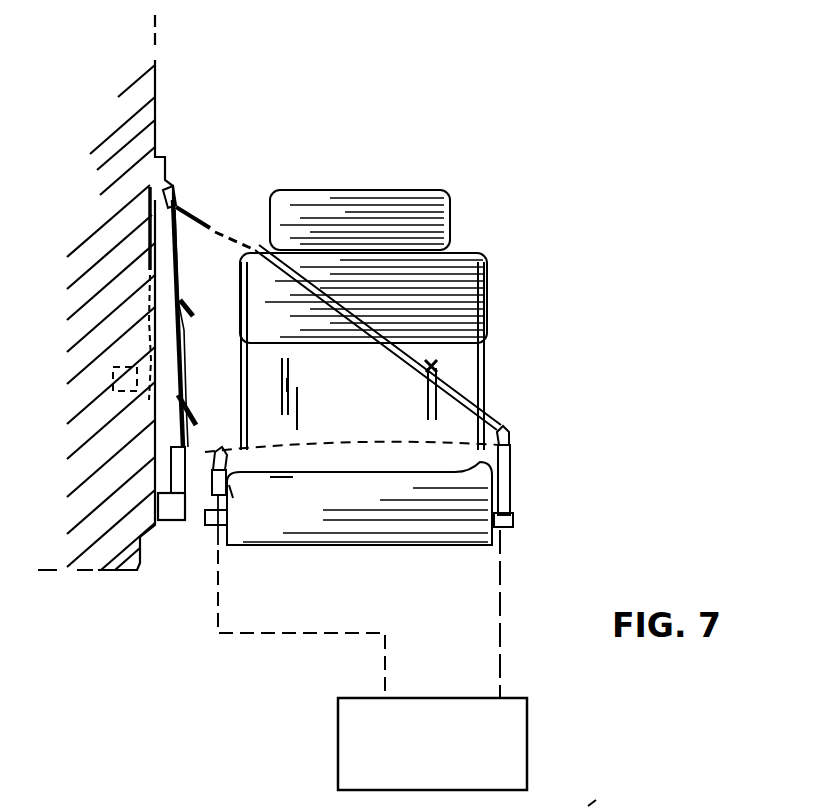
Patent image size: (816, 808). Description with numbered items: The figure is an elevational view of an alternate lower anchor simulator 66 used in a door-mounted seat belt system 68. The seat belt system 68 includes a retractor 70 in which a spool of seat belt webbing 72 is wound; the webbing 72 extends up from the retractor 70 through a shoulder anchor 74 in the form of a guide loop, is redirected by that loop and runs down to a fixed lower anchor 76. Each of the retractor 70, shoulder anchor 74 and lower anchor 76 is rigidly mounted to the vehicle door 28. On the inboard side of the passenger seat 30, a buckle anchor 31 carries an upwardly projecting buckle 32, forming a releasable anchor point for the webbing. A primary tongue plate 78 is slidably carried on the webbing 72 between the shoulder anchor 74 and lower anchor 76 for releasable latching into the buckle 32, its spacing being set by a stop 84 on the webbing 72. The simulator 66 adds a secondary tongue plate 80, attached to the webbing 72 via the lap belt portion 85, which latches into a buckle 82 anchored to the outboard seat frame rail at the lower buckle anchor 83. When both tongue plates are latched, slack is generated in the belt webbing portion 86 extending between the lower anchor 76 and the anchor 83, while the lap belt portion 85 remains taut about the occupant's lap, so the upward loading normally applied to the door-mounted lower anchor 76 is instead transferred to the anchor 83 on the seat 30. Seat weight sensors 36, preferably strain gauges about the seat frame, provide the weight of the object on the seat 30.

The vehicle door 28 is at (96, 72).
The passenger seat 30 is at (521, 282).
The buckle anchor 31 is at (513, 520).
The buckle 32 is at (517, 478).
The seat weight sensors 36 is at (337, 750).
The anchor simulator 66 is at (197, 541).
The door-mounted seat belt system 68 is at (233, 215).
The retractor 70 is at (113, 378).
The seat belt webbing 72 is at (205, 214).
The shoulder anchor 74 is at (173, 200).
The lower anchor 76 is at (171, 515).
The primary tongue plate 78 is at (187, 304).
The secondary tongue plate 80 is at (170, 417).
The buckle 82 is at (232, 492).
The lower buckle anchor 83 is at (217, 535).
The stop 84 is at (180, 322).
The lap belt portion 85 is at (611, 798).
The belt webbing portion 86 is at (200, 470).